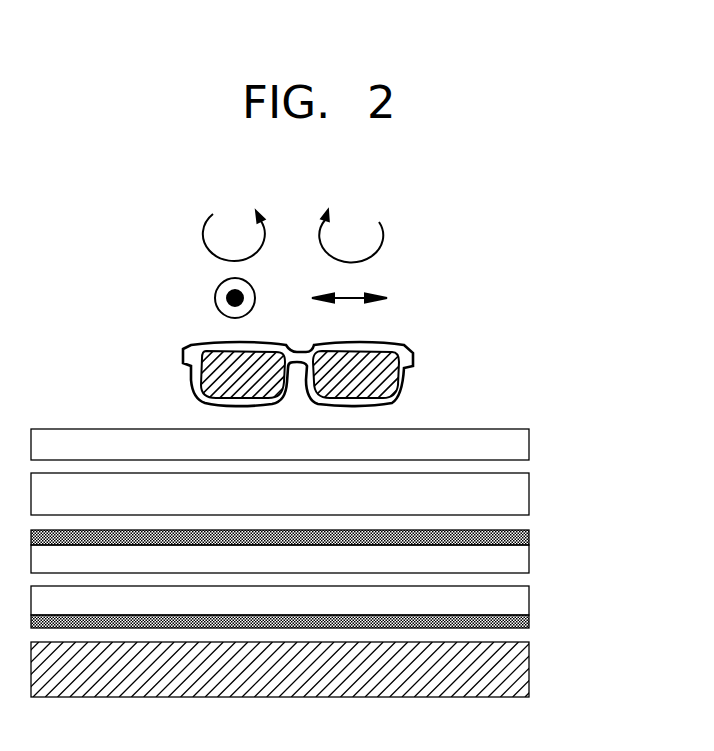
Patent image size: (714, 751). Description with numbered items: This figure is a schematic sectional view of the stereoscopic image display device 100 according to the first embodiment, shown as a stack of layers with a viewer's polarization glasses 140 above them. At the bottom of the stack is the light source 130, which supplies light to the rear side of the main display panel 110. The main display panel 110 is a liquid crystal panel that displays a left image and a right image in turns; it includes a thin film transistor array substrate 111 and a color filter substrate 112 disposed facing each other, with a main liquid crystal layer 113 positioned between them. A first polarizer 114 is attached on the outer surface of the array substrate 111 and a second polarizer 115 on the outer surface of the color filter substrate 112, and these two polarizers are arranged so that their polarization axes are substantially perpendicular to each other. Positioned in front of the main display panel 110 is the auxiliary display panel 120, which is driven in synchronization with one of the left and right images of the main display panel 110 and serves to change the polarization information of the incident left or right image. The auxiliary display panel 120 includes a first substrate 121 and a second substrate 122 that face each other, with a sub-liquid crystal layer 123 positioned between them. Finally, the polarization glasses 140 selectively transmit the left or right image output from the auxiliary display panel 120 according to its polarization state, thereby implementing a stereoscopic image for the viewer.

The stereoscopic image display device 100 is at (541, 404).
The main display panel 110 is at (334, 583).
The thin film transistor array substrate 111 is at (525, 605).
The color filter substrate 112 is at (525, 563).
The main liquid crystal layer 113 is at (523, 583).
The first polarizer 114 is at (312, 625).
The second polarizer 115 is at (525, 542).
The auxiliary display panel 120 is at (334, 472).
The first substrate 121 is at (525, 500).
The second substrate 122 is at (525, 447).
The sub-liquid crystal layer 123 is at (523, 470).
The light source 130 is at (525, 677).
The polarization glasses 140 is at (420, 340).